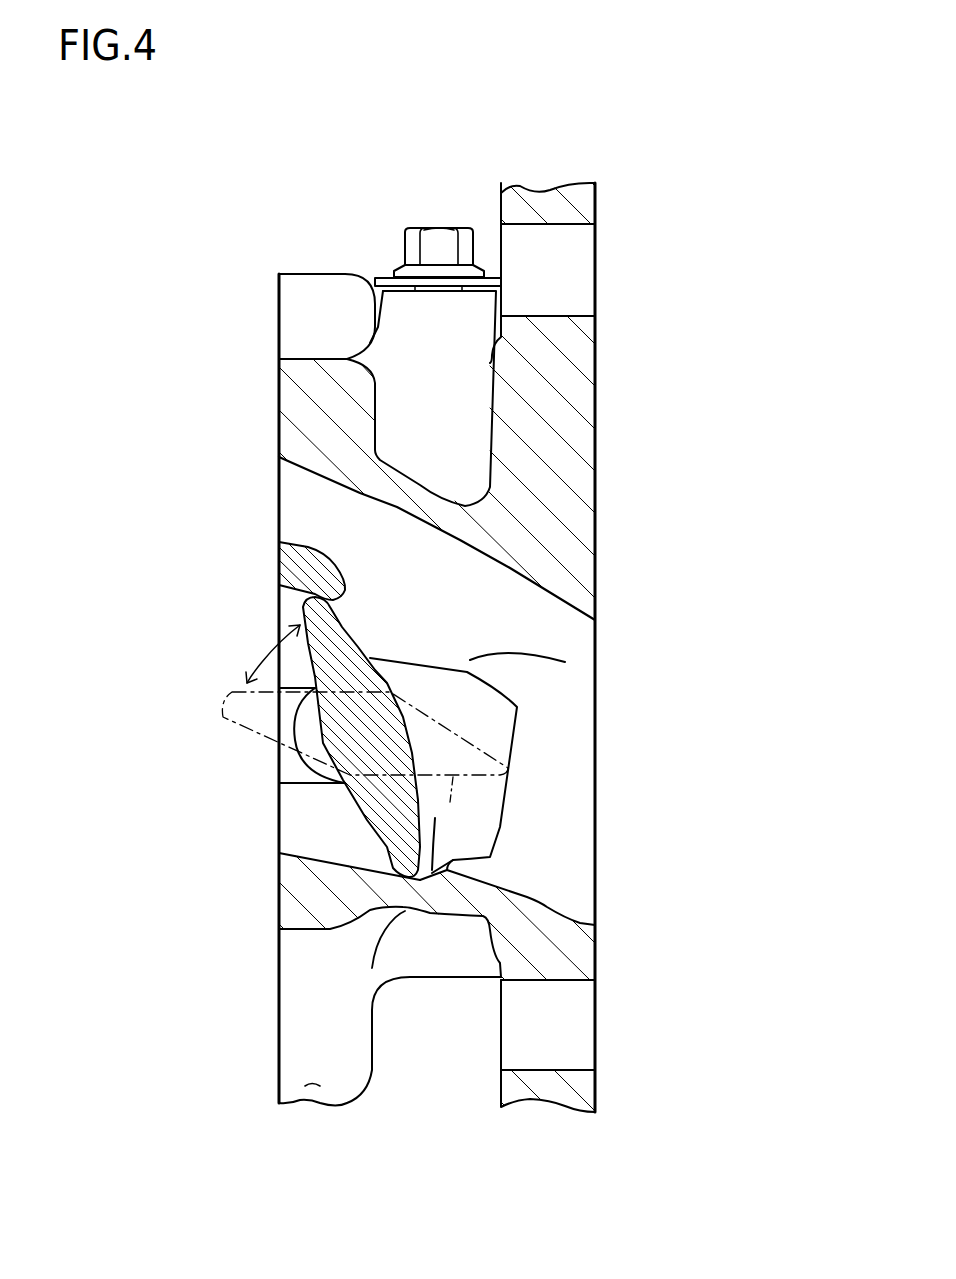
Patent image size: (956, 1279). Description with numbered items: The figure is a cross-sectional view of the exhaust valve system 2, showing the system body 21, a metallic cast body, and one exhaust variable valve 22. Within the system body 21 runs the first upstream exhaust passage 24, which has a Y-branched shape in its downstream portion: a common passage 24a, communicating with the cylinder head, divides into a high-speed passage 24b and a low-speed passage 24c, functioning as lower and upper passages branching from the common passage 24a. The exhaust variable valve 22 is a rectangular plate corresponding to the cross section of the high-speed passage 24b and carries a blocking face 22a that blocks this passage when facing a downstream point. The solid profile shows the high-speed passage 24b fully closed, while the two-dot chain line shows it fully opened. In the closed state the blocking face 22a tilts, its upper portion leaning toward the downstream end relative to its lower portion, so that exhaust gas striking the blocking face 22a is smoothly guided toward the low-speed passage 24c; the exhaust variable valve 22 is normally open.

The exhaust valve system 2 is at (323, 197).
The system body 21 is at (303, 273).
The exhaust variable valve 22 is at (417, 798).
The blocking face 22a is at (382, 678).
The first upstream exhaust passage 24 is at (435, 647).
The common passage 24a is at (570, 840).
The high-speed passage 24b is at (302, 817).
The low-speed passage 24c is at (302, 507).